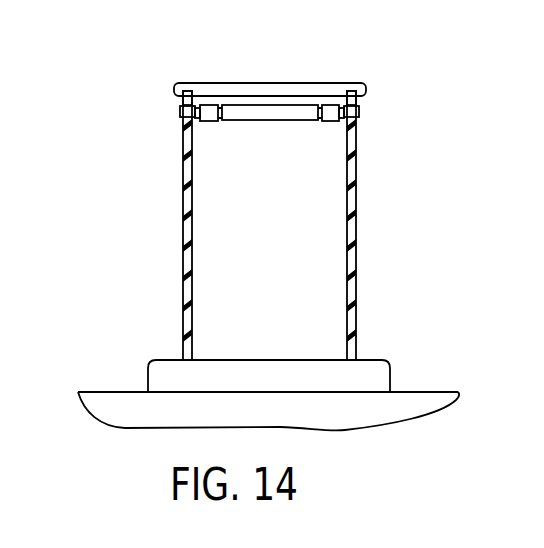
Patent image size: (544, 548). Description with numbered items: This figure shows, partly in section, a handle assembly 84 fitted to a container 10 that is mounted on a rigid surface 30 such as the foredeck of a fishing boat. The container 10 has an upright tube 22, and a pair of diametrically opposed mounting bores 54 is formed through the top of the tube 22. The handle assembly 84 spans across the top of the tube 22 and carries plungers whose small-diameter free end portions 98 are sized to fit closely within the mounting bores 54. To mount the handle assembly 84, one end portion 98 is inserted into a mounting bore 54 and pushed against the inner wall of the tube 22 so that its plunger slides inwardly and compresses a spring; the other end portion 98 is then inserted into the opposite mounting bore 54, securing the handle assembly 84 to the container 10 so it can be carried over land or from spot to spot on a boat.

The container 10 is at (126, 251).
The tube 22 is at (357, 226).
The rigid surface 30 is at (107, 392).
The mounting bores 54 is at (184, 101).
The handle assembly 84 is at (270, 97).
The free end portion 98 is at (181, 114).